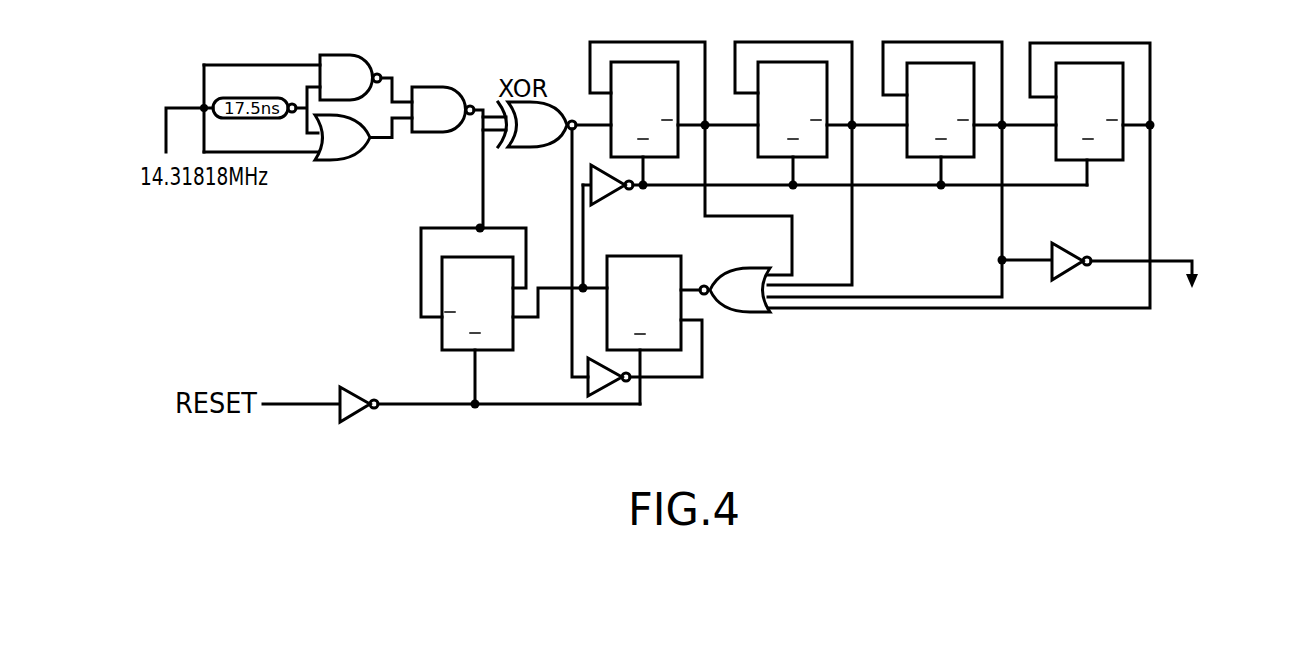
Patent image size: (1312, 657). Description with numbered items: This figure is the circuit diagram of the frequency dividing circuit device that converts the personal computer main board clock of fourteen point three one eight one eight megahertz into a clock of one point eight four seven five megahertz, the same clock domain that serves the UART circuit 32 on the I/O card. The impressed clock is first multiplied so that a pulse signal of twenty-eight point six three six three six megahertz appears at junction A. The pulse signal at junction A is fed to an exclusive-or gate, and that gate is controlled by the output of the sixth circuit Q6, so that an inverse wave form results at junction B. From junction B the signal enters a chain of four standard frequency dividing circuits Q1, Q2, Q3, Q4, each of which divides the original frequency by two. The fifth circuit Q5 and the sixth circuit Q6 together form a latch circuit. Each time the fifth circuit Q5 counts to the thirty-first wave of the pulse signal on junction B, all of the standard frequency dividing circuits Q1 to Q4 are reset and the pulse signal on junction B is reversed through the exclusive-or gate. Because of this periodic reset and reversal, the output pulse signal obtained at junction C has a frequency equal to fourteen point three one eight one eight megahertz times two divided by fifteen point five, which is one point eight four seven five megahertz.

The UART circuit 32 is at (895, 175).
The junction A is at (470, 96).
The junction B is at (579, 111).
The junction C is at (1182, 302).
The standard frequency dividing circuit Q1 is at (647, 99).
The standard frequency dividing circuit Q2 is at (793, 99).
The standard frequency dividing circuit Q3 is at (942, 99).
The standard frequency dividing circuit Q4 is at (1152, 82).
The fifth circuit Q5 is at (644, 304).
The sixth circuit Q6 is at (473, 288).